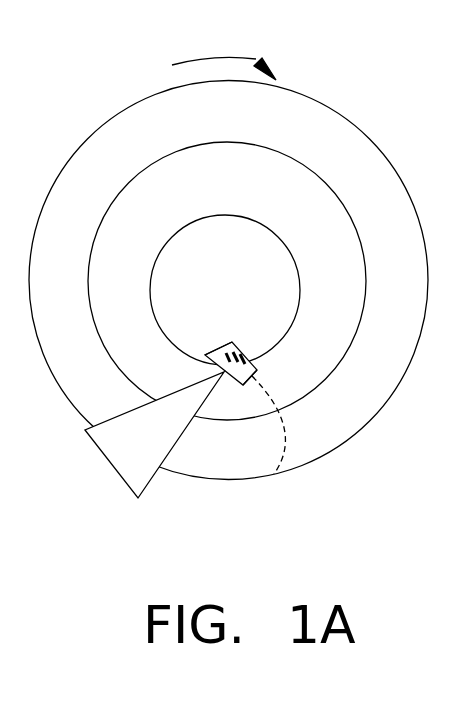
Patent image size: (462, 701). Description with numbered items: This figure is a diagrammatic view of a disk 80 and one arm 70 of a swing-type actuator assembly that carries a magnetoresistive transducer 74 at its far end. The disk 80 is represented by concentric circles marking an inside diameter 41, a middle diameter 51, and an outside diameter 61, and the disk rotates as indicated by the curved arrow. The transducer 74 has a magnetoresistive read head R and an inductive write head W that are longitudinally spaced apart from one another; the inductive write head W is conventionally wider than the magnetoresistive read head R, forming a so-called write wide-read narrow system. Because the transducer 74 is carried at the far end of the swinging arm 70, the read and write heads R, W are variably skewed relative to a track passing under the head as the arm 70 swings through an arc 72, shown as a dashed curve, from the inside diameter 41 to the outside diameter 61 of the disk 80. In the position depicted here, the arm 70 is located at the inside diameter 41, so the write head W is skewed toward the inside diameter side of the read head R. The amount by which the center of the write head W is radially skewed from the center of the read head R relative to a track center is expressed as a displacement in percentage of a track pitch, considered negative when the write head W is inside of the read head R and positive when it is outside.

The disk 80 is at (314, 57).
The outside diameter 61 is at (122, 112).
The middle diameter 51 is at (203, 146).
The inside diameter 41 is at (241, 216).
The arm 70 is at (145, 463).
The arc 72 is at (278, 452).
The magnetoresistive transducer 74 is at (257, 374).
The inductive write head W is at (250, 359).
The magnetoresistive read head R is at (212, 365).